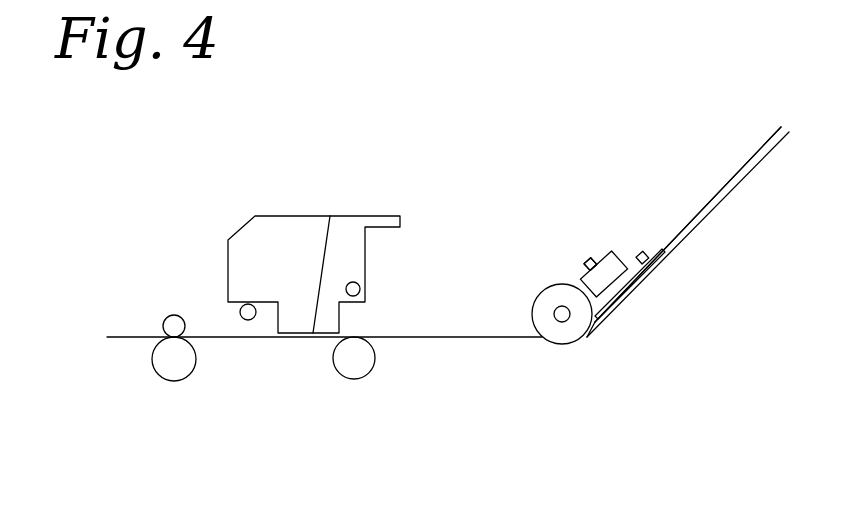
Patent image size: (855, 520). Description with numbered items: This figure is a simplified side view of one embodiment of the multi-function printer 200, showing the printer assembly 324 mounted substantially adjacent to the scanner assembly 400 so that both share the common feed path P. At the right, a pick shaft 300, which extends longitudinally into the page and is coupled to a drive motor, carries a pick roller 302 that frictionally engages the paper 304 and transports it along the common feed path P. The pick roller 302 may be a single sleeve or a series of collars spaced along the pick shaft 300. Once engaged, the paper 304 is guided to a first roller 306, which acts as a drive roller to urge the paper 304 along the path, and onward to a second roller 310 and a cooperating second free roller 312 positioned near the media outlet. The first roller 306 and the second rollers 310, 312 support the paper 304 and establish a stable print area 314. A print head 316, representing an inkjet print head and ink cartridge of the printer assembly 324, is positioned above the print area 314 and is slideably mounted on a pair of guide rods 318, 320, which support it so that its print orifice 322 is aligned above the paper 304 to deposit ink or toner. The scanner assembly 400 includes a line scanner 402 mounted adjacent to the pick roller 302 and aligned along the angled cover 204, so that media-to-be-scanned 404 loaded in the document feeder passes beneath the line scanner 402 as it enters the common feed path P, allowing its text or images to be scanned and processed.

The common feed path P is at (125, 338).
The multi-function printer 200 is at (476, 146).
The angled cover 204 is at (713, 213).
The pick shaft 300 is at (562, 322).
The pick roller 302 is at (545, 338).
The paper 304 is at (707, 200).
The first roller 306 is at (354, 380).
The second roller 310 is at (157, 377).
The second free roller 312 is at (170, 317).
The print area 314 is at (254, 352).
The print head 316 is at (285, 215).
The guide rod 318 is at (244, 305).
The guide rod 320 is at (360, 287).
The print orifice 322 is at (335, 216).
The printer assembly 324 is at (222, 175).
The scanner assembly 400 is at (603, 242).
The line scanner 402 is at (622, 262).
The media-to-be-scanned 404 is at (688, 224).